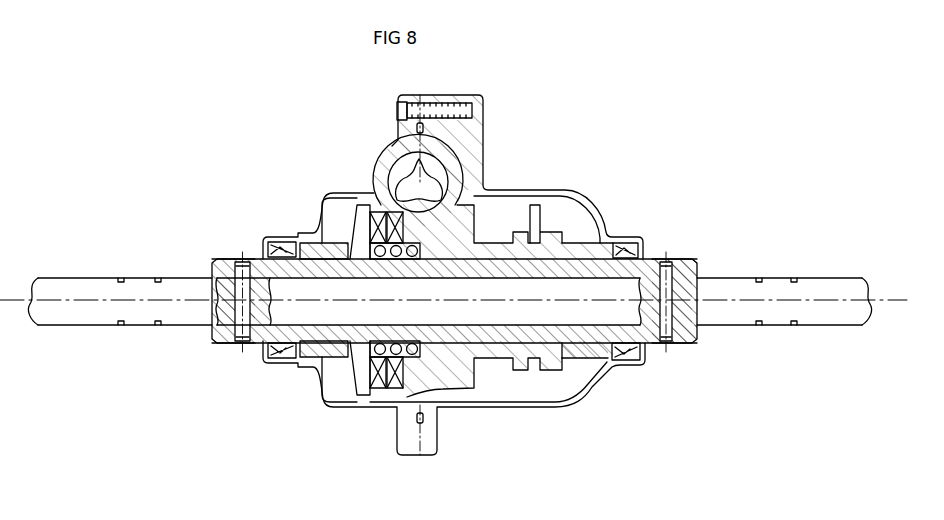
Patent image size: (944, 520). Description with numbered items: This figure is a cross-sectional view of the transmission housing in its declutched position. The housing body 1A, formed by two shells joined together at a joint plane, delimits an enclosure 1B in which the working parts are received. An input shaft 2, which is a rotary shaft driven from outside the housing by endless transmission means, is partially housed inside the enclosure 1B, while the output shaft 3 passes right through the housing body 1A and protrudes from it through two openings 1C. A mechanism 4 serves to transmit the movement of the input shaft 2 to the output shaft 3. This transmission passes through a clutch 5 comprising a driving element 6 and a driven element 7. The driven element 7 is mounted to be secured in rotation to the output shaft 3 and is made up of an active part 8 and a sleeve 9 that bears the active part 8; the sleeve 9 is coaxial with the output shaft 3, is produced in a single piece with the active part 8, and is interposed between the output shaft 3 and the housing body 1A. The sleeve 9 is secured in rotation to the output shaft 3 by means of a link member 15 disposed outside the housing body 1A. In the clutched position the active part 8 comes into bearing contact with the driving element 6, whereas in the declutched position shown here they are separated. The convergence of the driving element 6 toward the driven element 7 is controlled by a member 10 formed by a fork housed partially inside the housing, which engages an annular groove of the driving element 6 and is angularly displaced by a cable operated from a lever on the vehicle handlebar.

The housing body 1A is at (555, 413).
The enclosure 1B is at (518, 387).
The openings 1C is at (262, 347).
The input shaft 2 is at (438, 180).
The output shaft 3 is at (743, 277).
The transmission mechanism 4 is at (459, 200).
The clutch 5 is at (399, 219).
The driving element 6 is at (462, 233).
The driven element 7 is at (356, 212).
The active part 8 is at (381, 216).
The sleeve 9 is at (622, 262).
The control member 10 is at (541, 210).
The link member 15 is at (669, 262).